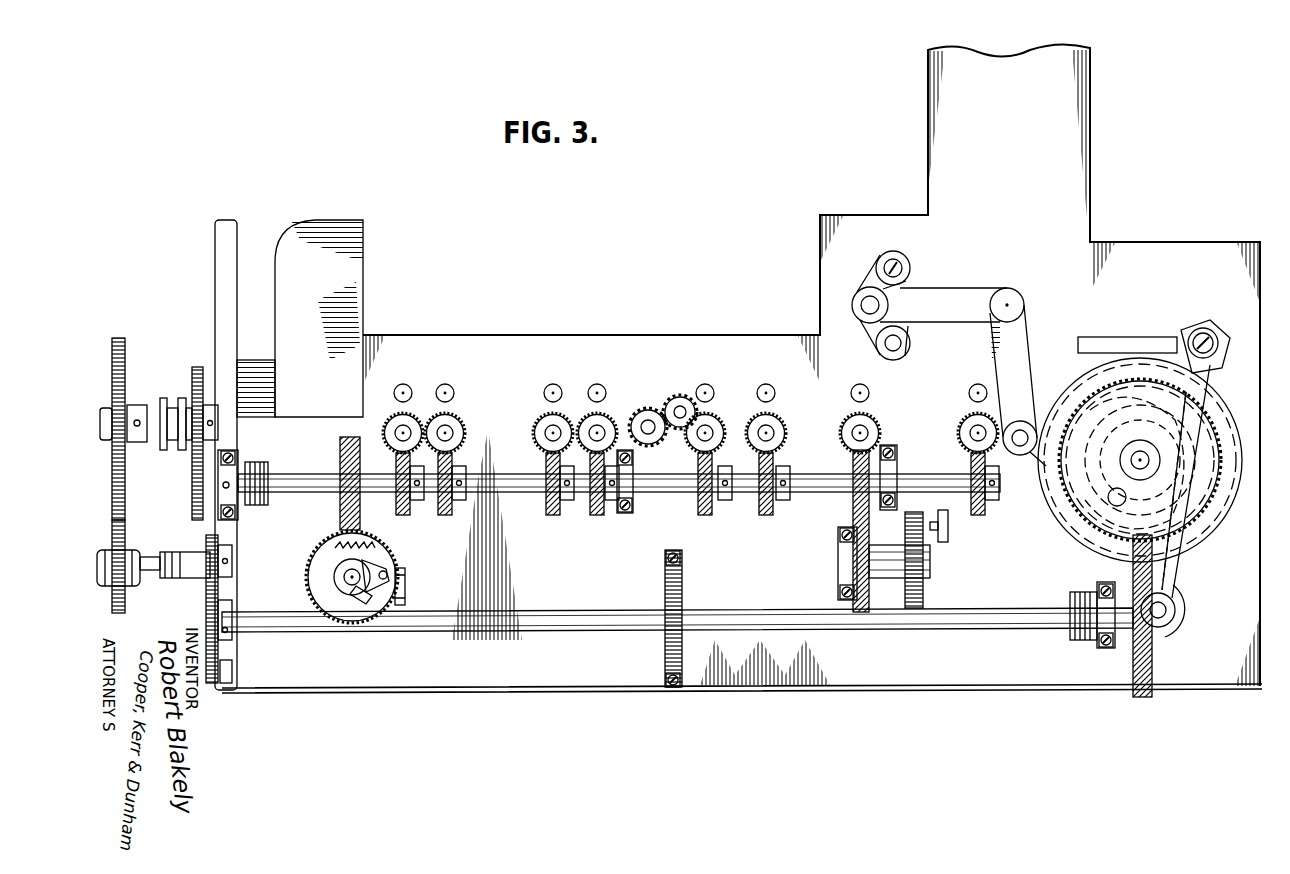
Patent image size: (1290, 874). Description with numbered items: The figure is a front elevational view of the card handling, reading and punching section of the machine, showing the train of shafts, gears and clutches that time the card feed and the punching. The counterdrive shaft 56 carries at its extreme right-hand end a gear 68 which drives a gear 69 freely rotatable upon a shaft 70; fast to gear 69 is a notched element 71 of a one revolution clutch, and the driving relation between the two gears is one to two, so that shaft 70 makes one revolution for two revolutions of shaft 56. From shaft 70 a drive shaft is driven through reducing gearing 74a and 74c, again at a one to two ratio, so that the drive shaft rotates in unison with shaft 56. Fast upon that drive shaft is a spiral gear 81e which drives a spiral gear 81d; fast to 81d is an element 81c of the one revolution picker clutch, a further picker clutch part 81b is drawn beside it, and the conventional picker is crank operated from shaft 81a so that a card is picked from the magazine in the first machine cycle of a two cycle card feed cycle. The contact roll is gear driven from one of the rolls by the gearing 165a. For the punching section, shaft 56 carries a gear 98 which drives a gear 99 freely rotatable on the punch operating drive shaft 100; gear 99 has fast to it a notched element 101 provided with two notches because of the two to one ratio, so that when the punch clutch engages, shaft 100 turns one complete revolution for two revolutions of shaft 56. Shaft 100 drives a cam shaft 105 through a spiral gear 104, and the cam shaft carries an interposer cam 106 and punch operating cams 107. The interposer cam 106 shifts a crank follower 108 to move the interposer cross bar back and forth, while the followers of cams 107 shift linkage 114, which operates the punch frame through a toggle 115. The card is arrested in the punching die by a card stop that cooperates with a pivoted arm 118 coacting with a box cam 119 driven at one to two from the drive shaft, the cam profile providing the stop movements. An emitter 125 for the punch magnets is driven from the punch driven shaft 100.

The shaft 56 is at (112, 572).
The gear 68 is at (126, 592).
The gear 69 is at (121, 344).
The shaft 70 is at (156, 420).
The notched element 71 is at (134, 445).
The reducing gearing 74a is at (198, 367).
The reducing gearing 74c is at (197, 504).
The shaft 81a is at (350, 578).
The pawl 81b is at (390, 573).
The element 81c is at (362, 596).
The spiral gear 81d is at (372, 546).
The spiral gear 81e is at (340, 452).
The gear 98 is at (220, 540).
The gear 99 is at (224, 678).
The punch operating drive shaft 100 is at (457, 633).
The notched element 101 is at (226, 655).
The spiral gear 104 is at (1093, 503).
The cam shaft 105 is at (1136, 457).
The interposer cam 106 is at (1192, 530).
The punch operating cams 107 is at (1150, 395).
The crank follower 108 is at (1212, 372).
The linkage 114 is at (964, 307).
The toggle 115 is at (880, 283).
The pivoted arm 118 is at (948, 531).
The box cam 119 is at (925, 597).
The emitter 125 is at (684, 594).
The gearing 165a is at (676, 397).